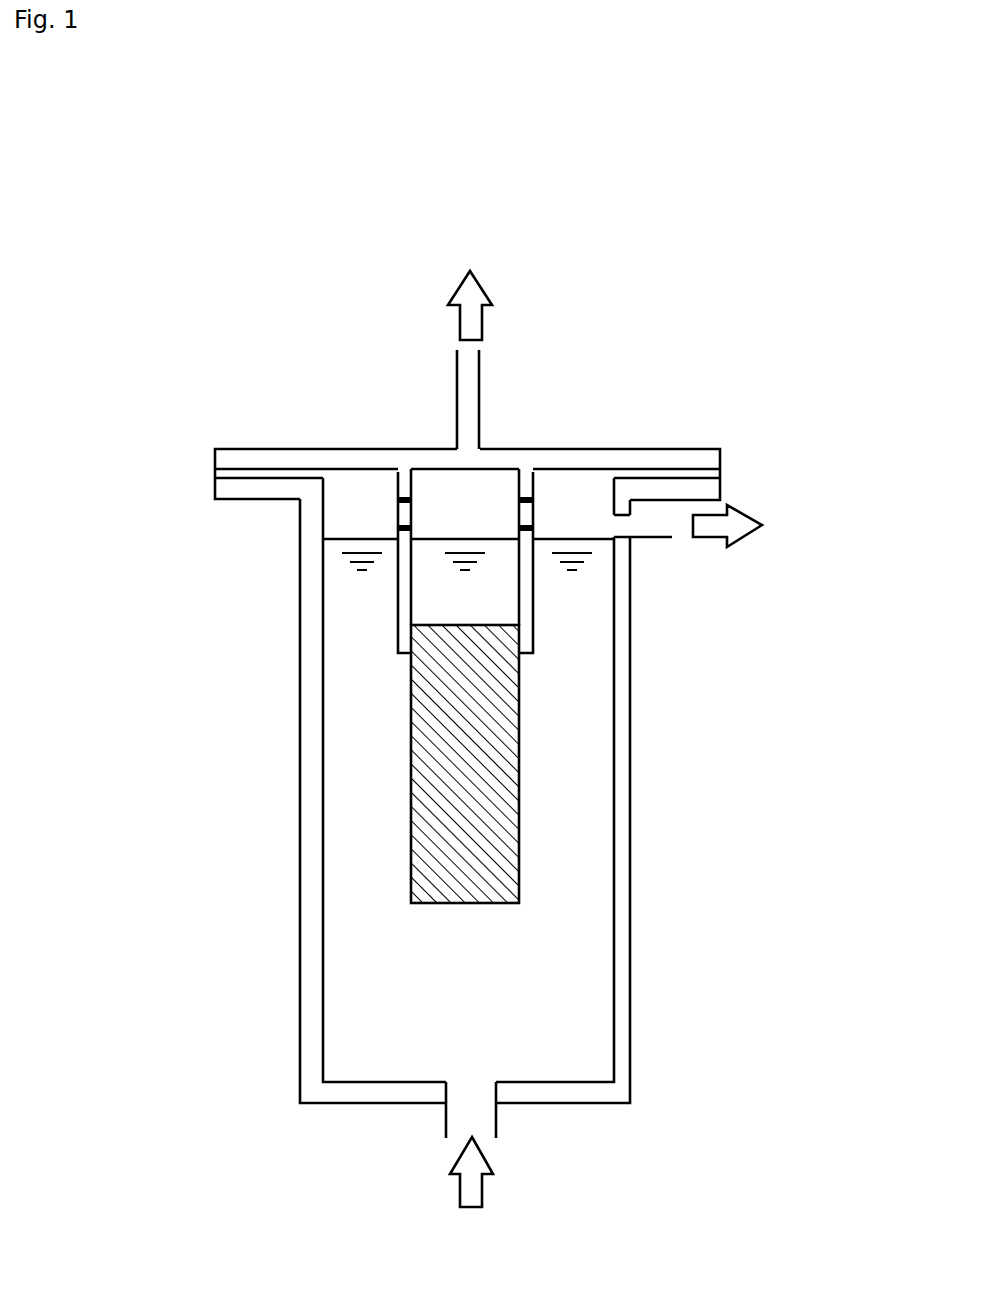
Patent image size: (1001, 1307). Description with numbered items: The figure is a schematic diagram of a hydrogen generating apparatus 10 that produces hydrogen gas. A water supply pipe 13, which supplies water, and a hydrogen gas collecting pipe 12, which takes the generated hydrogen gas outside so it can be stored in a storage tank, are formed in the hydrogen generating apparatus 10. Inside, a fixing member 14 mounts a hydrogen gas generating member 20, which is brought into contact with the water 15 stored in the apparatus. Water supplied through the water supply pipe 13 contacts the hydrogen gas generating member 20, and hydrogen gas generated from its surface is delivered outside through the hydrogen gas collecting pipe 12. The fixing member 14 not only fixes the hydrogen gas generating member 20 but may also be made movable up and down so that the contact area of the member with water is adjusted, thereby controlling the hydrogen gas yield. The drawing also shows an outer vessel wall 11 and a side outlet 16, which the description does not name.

The hydrogen generating apparatus 10 is at (581, 285).
The container 11 is at (632, 623).
The hydrogen gas collecting pipe 12 is at (478, 427).
The water supply pipe 13 is at (497, 1116).
The fixing member 14 is at (398, 508).
The water 15 is at (483, 988).
The water outlet 16 is at (660, 527).
The hydrogen gas generating member 20 is at (428, 705).